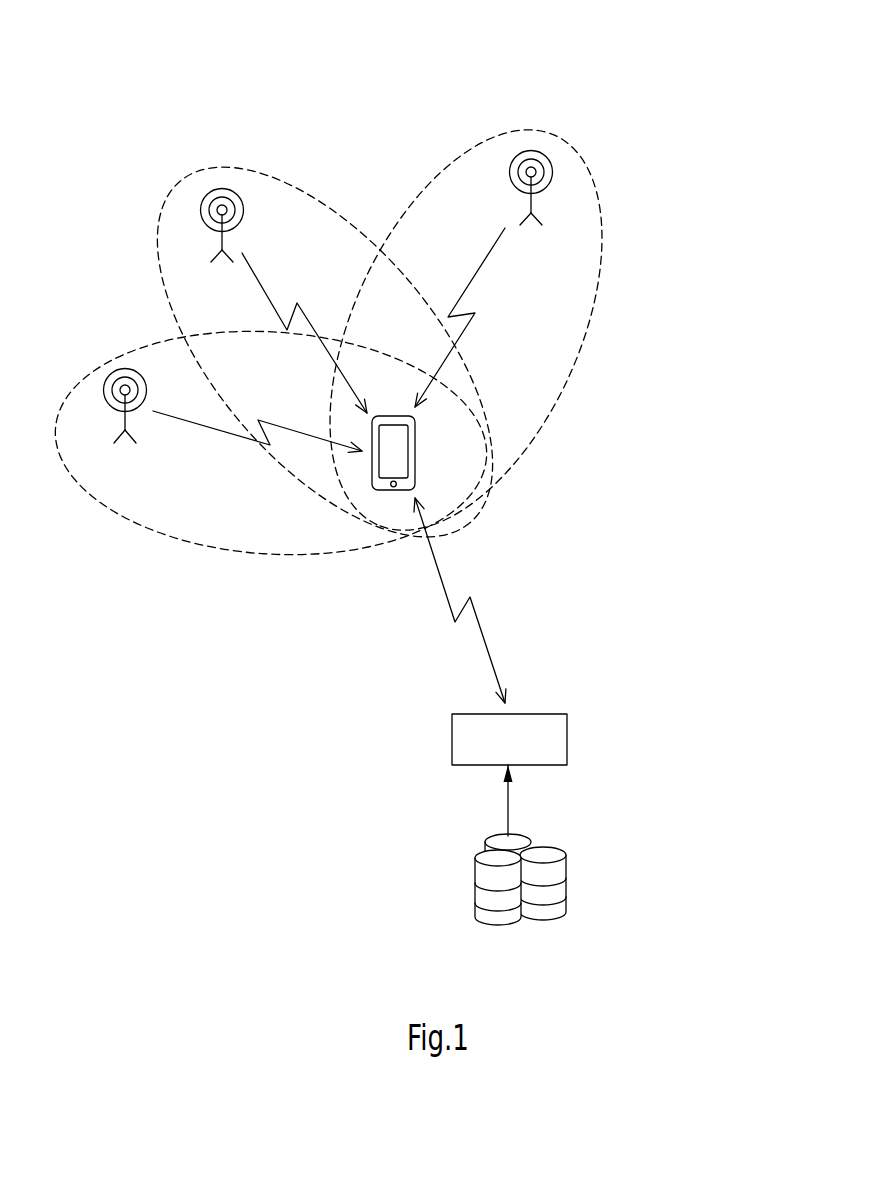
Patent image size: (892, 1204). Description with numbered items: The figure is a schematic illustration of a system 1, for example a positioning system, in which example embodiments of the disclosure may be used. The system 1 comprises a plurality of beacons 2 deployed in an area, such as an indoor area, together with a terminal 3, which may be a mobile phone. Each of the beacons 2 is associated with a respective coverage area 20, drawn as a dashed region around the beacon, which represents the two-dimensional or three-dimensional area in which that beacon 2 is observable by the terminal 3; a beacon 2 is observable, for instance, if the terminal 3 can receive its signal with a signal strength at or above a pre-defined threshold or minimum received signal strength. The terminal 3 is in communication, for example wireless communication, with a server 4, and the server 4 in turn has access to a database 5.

The system 1 is at (737, 85).
The beacon 2 is at (212, 188).
The coverage area 20 is at (304, 190).
The terminal 3 is at (415, 468).
The server 4 is at (545, 714).
The database 5 is at (568, 880).